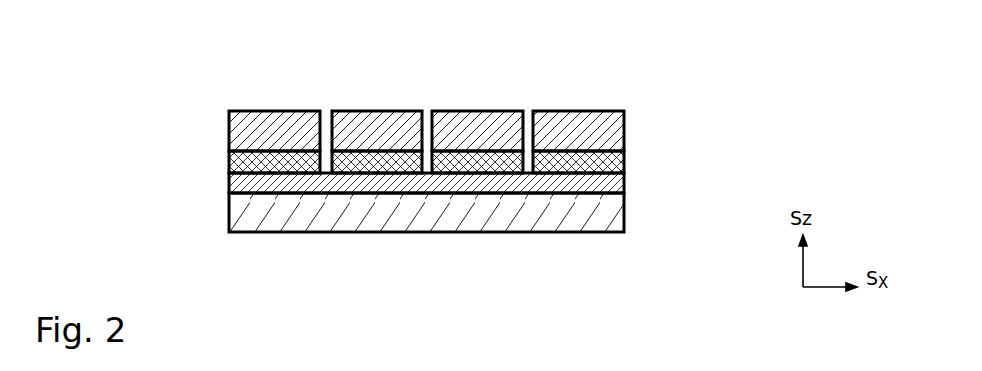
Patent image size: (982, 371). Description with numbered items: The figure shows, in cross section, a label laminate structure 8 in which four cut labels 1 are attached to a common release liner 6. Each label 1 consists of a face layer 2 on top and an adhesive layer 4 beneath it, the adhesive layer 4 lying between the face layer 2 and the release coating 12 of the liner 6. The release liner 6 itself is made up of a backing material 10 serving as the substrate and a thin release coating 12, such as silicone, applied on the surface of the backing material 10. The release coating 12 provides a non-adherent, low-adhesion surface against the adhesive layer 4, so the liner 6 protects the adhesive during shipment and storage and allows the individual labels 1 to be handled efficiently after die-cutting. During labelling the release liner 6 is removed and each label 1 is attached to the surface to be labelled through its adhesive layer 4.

The label 1 is at (322, 105).
The face layer 2 is at (624, 137).
The adhesive layer 4 is at (624, 163).
The release liner 6 is at (215, 173).
The label laminate structure 8 is at (520, 63).
The backing material 10 is at (624, 213).
The release coating 12 is at (624, 180).